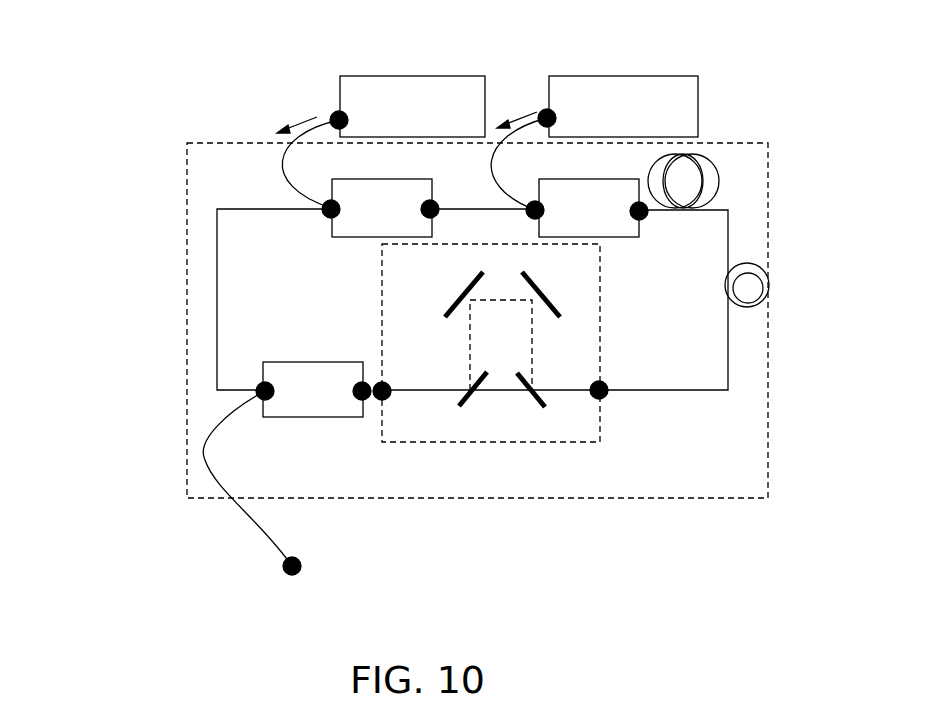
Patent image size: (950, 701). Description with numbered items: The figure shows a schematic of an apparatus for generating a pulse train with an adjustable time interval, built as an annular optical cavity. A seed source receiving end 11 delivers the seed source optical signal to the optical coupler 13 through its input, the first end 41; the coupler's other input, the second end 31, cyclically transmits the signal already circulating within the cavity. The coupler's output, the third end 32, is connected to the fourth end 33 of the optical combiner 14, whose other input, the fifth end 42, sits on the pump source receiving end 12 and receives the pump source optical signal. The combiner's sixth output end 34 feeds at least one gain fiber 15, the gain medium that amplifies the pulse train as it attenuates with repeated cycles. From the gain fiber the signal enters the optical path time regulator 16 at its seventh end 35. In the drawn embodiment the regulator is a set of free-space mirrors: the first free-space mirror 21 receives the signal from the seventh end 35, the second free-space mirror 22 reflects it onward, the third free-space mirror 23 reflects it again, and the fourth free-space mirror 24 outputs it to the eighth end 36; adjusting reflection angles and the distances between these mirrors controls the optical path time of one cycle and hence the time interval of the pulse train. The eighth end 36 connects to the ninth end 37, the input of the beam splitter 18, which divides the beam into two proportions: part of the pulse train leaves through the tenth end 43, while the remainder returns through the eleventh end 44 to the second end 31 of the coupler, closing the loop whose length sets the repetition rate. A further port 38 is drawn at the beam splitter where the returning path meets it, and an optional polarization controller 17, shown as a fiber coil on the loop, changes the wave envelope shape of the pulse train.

The seed source receiving end 11 is at (438, 76).
The pump source receiving end 12 is at (653, 76).
The optical coupler 13 is at (357, 237).
The optical combiner 14 is at (613, 237).
The gain fiber 15 is at (720, 183).
The optical path time regulator 16 is at (565, 442).
The polarization controller 17 is at (768, 280).
The beam splitter 18 is at (297, 362).
The first free-space mirror 21 is at (528, 382).
The second free-space mirror 22 is at (545, 290).
The third free-space mirror 23 is at (462, 296).
The fourth free-space mirror 24 is at (473, 392).
The second end 31 is at (331, 209).
The third end 32 is at (430, 209).
The fourth end 33 is at (535, 208).
The sixth output end 34 is at (639, 212).
The seventh end 35 is at (600, 391).
The eighth end 36 is at (384, 398).
The ninth end 37 is at (362, 400).
The beam splitter input port 38 is at (267, 400).
The first end 41 is at (339, 118).
The fifth end 42 is at (547, 118).
The tenth end 43 is at (292, 566).
The eleventh end 44 is at (265, 392).